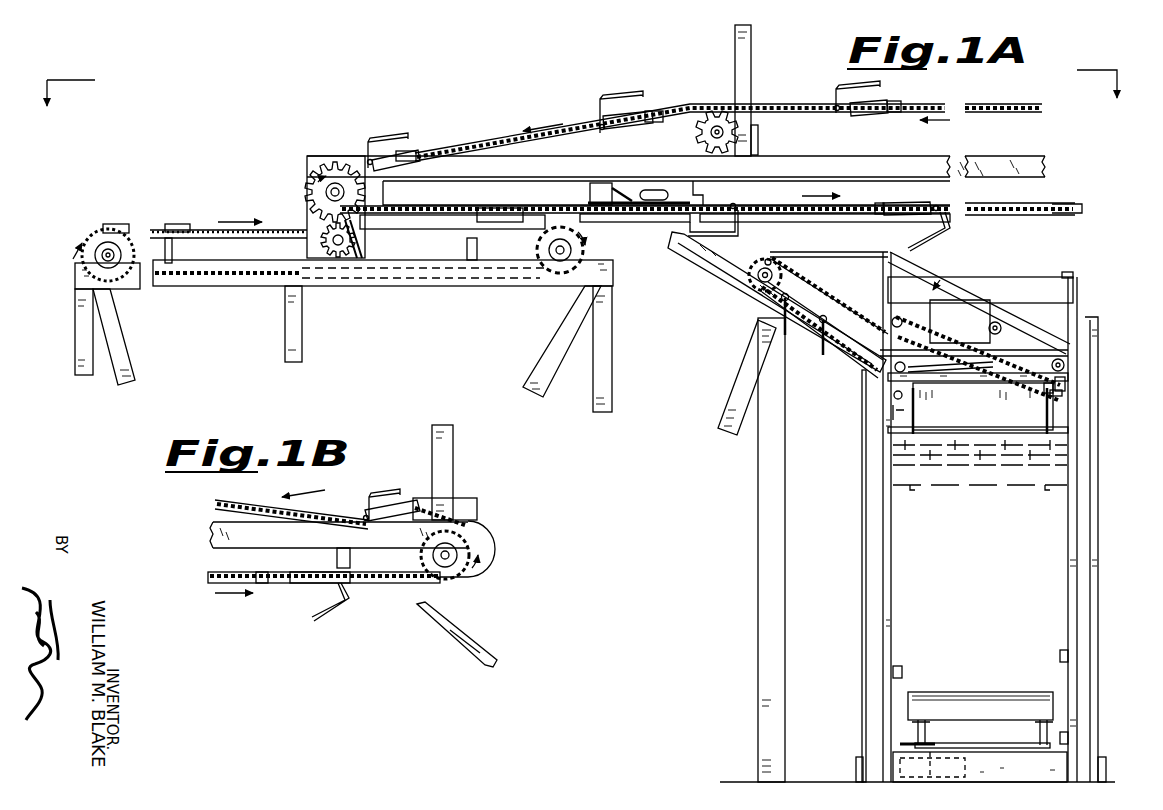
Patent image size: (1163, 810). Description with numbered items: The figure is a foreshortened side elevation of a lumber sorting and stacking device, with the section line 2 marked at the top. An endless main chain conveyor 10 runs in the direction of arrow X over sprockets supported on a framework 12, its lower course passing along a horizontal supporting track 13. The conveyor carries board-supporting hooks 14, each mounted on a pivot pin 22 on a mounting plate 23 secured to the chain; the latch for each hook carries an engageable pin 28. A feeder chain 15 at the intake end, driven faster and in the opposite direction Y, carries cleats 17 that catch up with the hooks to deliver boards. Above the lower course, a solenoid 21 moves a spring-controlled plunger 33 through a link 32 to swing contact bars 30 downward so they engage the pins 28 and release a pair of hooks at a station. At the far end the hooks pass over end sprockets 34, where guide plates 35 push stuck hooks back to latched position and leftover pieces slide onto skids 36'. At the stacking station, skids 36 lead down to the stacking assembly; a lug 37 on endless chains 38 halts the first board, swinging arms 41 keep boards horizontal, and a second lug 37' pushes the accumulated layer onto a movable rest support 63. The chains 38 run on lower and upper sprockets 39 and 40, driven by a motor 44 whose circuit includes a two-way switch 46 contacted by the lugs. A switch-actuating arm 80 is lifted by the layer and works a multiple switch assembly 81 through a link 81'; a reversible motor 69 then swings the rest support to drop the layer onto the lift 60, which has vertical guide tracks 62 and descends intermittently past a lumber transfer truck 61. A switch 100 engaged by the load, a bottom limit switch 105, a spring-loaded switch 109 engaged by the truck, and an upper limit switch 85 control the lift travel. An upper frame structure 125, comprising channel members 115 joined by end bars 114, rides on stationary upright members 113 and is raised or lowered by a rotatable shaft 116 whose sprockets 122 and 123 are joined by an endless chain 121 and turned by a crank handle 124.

In FIG. 1A, the section line 2- 2 is at (583, 102).
In FIG. 1A, the endless main chain conveyor 10 is at (688, 104).
In FIG. 1B, the endless main chain conveyor 10 is at (280, 508).
In FIG. 1A, the framework 12 is at (90, 283).
In FIG. 1A, the horizontal supporting track 13 is at (643, 214).
In FIG. 1B, the horizontal supporting track 13 is at (263, 584).
In FIG. 1A, the board-supporting hook 14 is at (391, 142).
In FIG. 1B, the board-supporting hook 14 is at (378, 500).
In FIG. 1A, the feeder chain 15 is at (292, 229).
In FIG. 1A, the cleat 17 is at (103, 240).
In FIG. 1A, the solenoid 21 is at (600, 190).
In FIG. 1A, the pivot pin 22 is at (368, 160).
In FIG. 1B, the pivot pin 22 is at (365, 513).
In FIG. 1A, the mounting plate 23 is at (408, 155).
In FIG. 1B, the mounting plate 23 is at (399, 518).
In FIG. 1A, the engageable pin 28 is at (420, 152).
In FIG. 1B, the engageable pin 28 is at (268, 575).
In FIG. 1A, the contact bar 30 is at (650, 215).
In FIG. 1A, the link 32 is at (655, 192).
In FIG. 1A, the spring-controlled plunger 33 is at (626, 192).
In FIG. 1B, the end sprocket 34 is at (450, 566).
In FIG. 1B, the guide plate 35 is at (447, 500).
In FIG. 1A, the skid 36 is at (777, 302).
In FIG. 1B, the skid 36' is at (473, 634).
In FIG. 1A, the lug 37 is at (870, 430).
In FIG. 1A, the lug 37' is at (751, 510).
In FIG. 1A, the endless chain 38 is at (805, 296).
In FIG. 1A, the lower sprocket 39 is at (895, 370).
In FIG. 1A, the upper sprocket 40 is at (758, 274).
In FIG. 1A, the swinging arm 41 is at (823, 338).
In FIG. 1A, the motor 44 is at (1000, 312).
In FIG. 1A, the two-way switch 46 is at (772, 262).
In FIG. 1A, the hoist or lift 60 is at (980, 767).
In FIG. 1A, the lumber transfer truck 61 is at (980, 720).
In FIG. 1A, the vertical guide track 62 is at (874, 530).
In FIG. 1A, the movable rest support 63 is at (980, 396).
In FIG. 1A, the reversible motor 69 is at (897, 745).
In FIG. 1A, the switch-actuating arm 80 is at (1057, 358).
In FIG. 1A, the multiple switch assembly 81 is at (1013, 320).
In FIG. 1A, the link 81' is at (980, 411).
In FIG. 1A, the upper limit switch 85 is at (893, 398).
In FIG. 1A, the switch 100 is at (1058, 656).
In FIG. 1A, the bottom limit switch 105 is at (1070, 738).
In FIG. 1A, the spring-loaded switch 109 is at (903, 672).
In FIG. 1A, the stationary upright member 113 is at (886, 280).
In FIG. 1A, the end bar 114 is at (988, 301).
In FIG. 1A, the channel member 115 is at (890, 303).
In FIG. 1A, the rotatable shaft 116 is at (928, 322).
In FIG. 1A, the endless chain 121 is at (1034, 400).
In FIG. 1A, the sprocket 122 is at (890, 322).
In FIG. 1A, the sprocket 123 is at (1066, 383).
In FIG. 1A, the crank handle 124 is at (1062, 393).
In FIG. 1A, the upper frame structure 125 is at (957, 274).